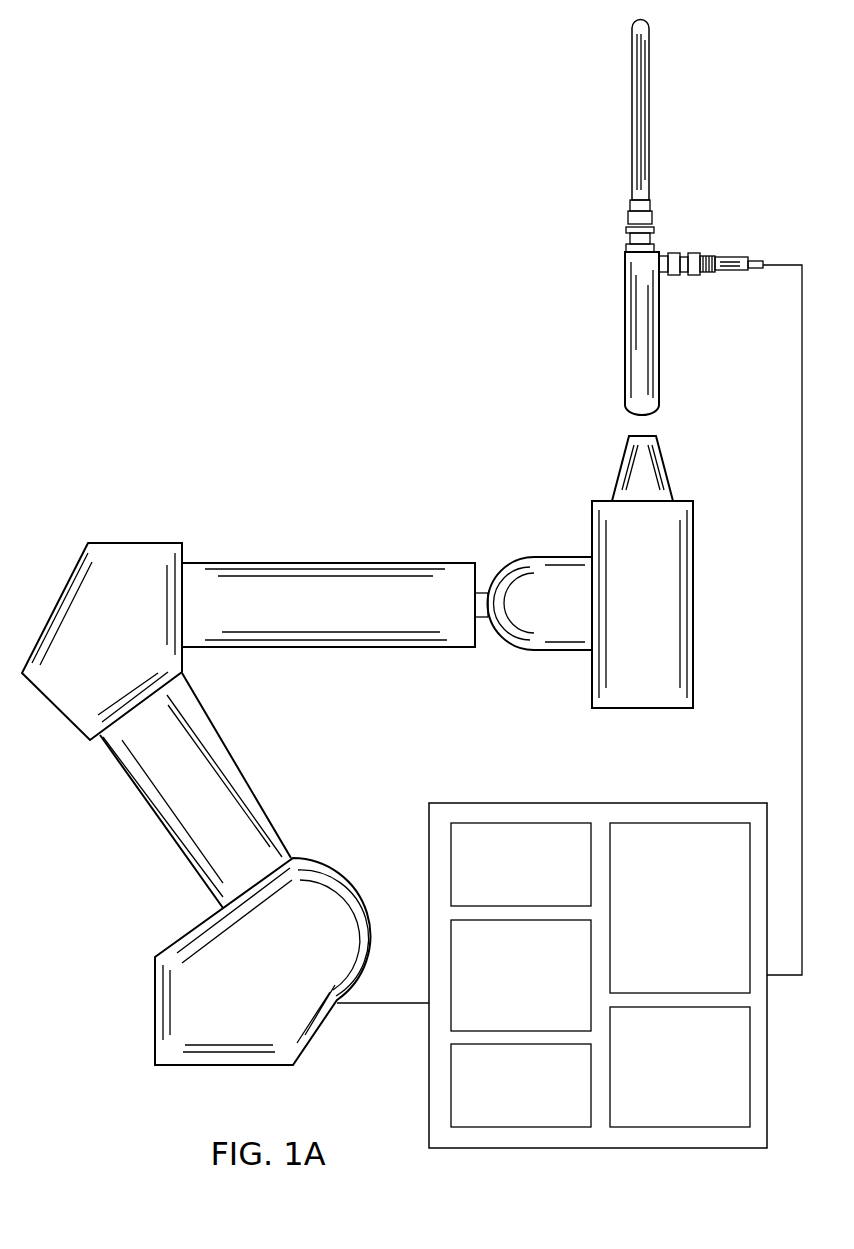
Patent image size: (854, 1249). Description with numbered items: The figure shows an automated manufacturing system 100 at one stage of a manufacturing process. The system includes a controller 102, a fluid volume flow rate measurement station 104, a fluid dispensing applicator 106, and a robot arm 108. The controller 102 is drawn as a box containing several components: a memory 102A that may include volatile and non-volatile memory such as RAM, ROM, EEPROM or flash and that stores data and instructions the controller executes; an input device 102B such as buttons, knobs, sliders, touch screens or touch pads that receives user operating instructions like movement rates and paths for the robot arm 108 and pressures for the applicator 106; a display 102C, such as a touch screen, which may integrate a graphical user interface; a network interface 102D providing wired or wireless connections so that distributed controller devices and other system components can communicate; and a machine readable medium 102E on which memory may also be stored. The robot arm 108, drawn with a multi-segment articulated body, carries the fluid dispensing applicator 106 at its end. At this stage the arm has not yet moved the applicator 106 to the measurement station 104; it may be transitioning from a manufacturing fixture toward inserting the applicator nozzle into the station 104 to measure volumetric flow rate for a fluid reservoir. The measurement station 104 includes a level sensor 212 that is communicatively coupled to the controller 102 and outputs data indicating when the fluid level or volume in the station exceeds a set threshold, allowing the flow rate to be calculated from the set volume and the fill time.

The automated manufacturing system 100 is at (168, 320).
The controller 102 is at (561, 803).
The memory 102A is at (521, 864).
The input device 102B is at (521, 975).
The display 102C is at (521, 1085).
The network interface 102D is at (680, 1067).
The machine readable medium 102E is at (680, 908).
The fluid volume flow rate measurement station 104 is at (625, 340).
The fluid dispensing applicator 106 is at (619, 470).
The robot arm 108 is at (317, 562).
The level sensor 212 is at (755, 256).